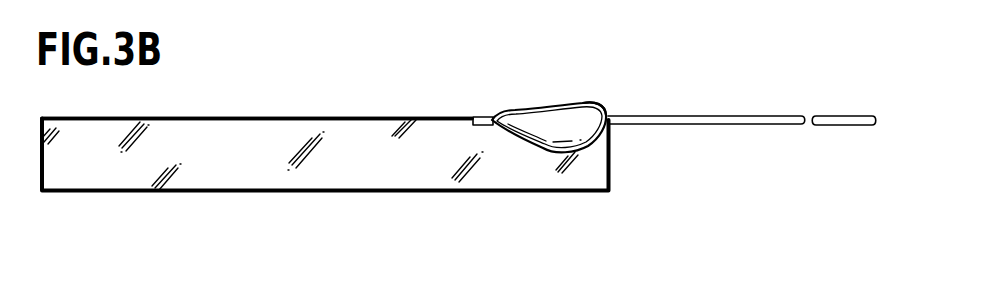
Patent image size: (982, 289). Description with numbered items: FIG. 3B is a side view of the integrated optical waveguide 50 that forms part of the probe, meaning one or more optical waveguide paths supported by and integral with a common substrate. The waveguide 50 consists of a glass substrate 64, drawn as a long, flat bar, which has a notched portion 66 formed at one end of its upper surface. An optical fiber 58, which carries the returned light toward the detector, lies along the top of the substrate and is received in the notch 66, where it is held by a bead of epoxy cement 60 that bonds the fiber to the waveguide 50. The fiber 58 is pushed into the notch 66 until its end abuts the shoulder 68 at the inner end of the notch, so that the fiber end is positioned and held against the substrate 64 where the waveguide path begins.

The integrated optical waveguide 50 is at (302, 117).
The optical fiber 58 is at (719, 115).
The epoxy cement 60 is at (581, 104).
The glass substrate 64 is at (356, 177).
The notched portion 66 is at (493, 116).
The shoulder 68 is at (475, 116).